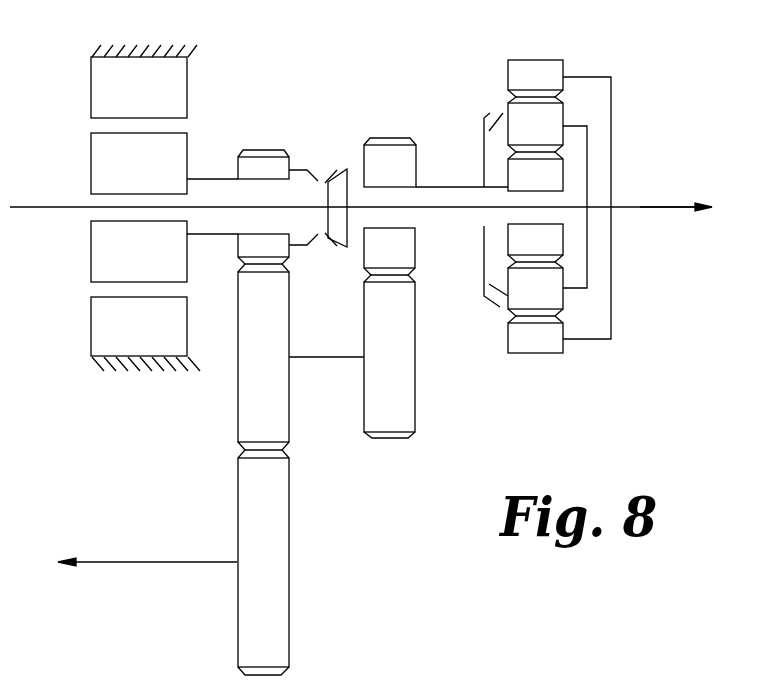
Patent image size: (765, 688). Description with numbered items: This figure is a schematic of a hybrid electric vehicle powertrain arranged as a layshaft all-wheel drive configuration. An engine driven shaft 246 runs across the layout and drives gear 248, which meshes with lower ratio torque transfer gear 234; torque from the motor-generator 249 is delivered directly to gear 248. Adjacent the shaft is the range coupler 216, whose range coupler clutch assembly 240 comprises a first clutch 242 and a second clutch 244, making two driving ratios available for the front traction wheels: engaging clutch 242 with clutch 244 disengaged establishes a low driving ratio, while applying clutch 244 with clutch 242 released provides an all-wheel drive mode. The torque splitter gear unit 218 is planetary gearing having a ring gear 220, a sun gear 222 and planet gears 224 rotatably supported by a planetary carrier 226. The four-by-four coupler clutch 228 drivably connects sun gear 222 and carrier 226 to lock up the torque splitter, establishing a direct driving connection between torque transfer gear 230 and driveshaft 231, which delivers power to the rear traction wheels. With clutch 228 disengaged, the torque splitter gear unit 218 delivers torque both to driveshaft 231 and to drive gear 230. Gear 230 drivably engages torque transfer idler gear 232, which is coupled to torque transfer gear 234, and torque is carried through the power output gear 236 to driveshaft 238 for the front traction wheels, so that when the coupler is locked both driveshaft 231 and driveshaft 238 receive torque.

The range coupler 216 is at (277, 188).
The torque splitter gear unit 218 is at (566, 210).
The ring gear 220 is at (548, 355).
The sun gear 222 is at (563, 177).
The planet gears 224 is at (563, 115).
The planetary carrier 226 is at (587, 145).
The 4×4 coupler clutch 228 is at (490, 113).
The torque transfer gear 230 is at (416, 158).
The driveshaft 231 is at (661, 208).
The torque transfer idler gear 232 is at (364, 400).
The lower ratio torque transfer gear 234 is at (237, 413).
The power output gear 236 is at (289, 598).
The driveshaft 238 is at (142, 562).
The range coupler clutch assembly 240 is at (327, 212).
The first clutch 242 is at (318, 172).
The second clutch 244 is at (343, 170).
The engine driven shaft 246 is at (47, 208).
The gear 248 is at (238, 160).
The electric motor 249 is at (192, 77).